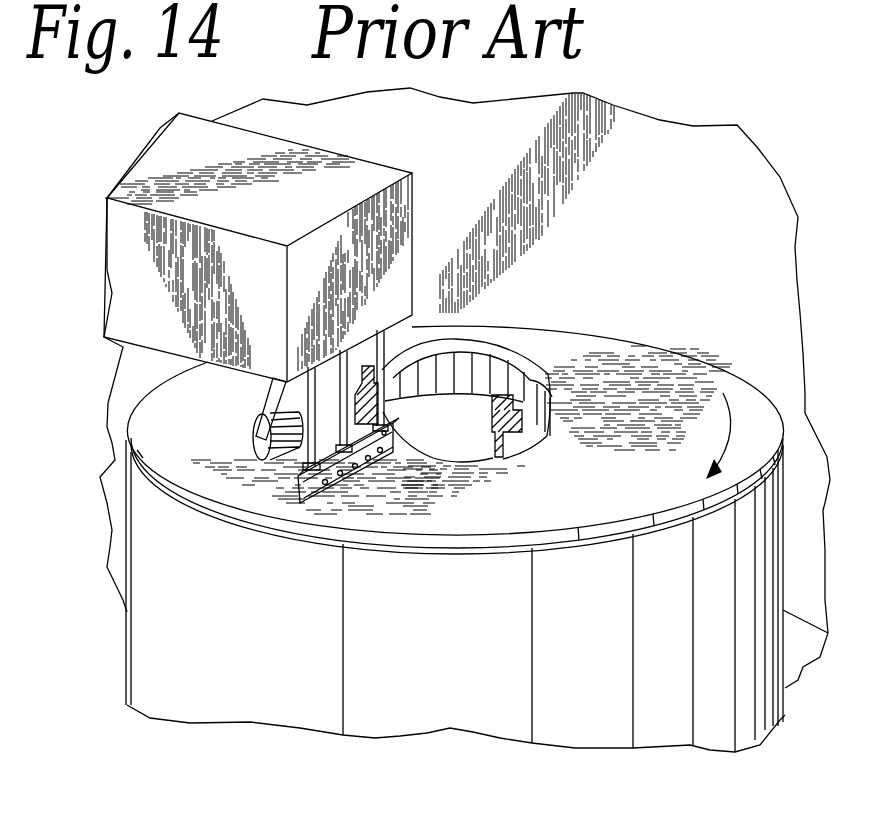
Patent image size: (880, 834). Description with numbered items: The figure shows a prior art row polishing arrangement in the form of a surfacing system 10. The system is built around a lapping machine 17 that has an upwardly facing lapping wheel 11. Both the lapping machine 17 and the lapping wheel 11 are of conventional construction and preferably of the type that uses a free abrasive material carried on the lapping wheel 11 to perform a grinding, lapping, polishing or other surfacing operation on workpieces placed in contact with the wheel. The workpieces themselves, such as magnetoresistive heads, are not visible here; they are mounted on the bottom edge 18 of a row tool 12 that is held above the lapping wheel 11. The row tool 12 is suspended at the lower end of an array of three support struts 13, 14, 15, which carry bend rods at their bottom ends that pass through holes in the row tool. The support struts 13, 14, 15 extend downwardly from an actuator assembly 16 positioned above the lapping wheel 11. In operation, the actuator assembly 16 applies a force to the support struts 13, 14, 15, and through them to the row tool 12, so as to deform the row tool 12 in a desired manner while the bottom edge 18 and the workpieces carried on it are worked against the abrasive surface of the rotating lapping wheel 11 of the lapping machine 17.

The surfacing system 10 is at (95, 524).
The lapping wheel 11 is at (612, 502).
The row tool 12 is at (349, 490).
The support strut 13 is at (395, 387).
The support strut 14 is at (388, 350).
The support strut 15 is at (290, 406).
The actuator assembly 16 is at (160, 162).
The lapping machine 17 is at (148, 667).
The bottom edge 18 is at (376, 458).